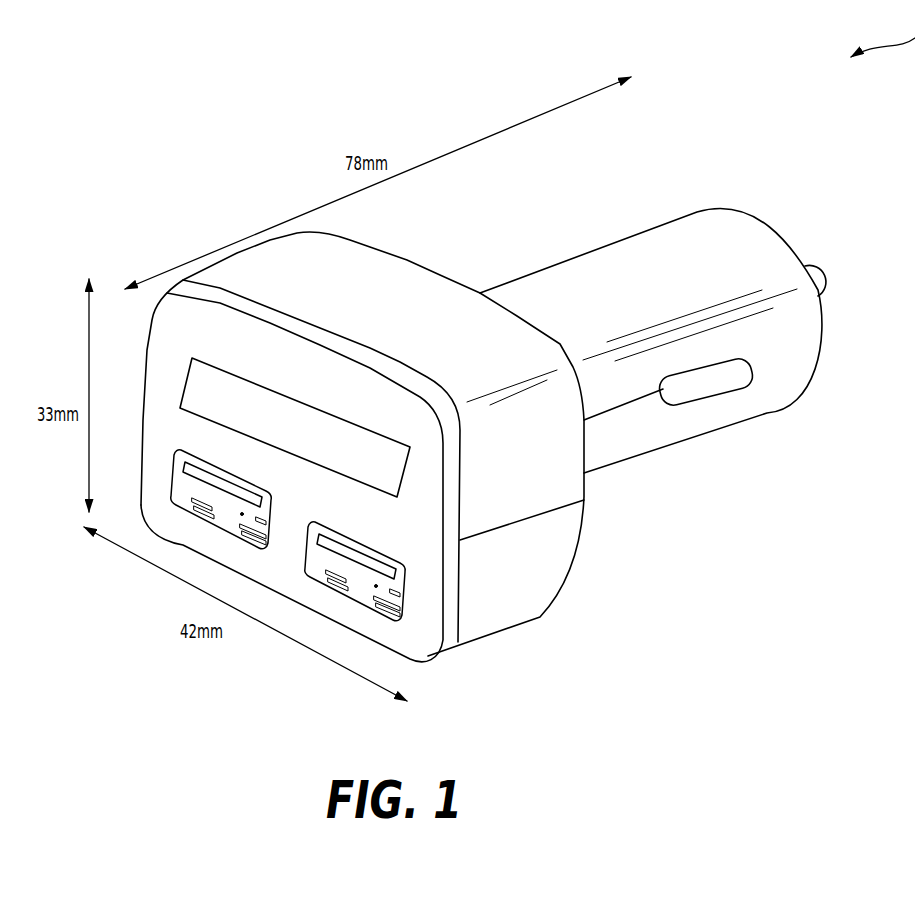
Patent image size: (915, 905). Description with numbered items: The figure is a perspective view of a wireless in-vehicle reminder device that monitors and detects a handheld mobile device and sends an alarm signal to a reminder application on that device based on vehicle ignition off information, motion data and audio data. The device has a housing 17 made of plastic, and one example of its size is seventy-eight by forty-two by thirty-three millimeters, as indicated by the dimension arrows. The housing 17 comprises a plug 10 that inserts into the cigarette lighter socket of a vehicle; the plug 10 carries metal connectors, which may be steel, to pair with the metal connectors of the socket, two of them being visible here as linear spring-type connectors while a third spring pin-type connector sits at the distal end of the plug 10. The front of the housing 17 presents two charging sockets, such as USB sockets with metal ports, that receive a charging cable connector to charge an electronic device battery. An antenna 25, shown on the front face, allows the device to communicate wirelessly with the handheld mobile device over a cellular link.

The plug 10 is at (822, 338).
The housing 17 is at (419, 264).
The antenna 25 is at (178, 394).